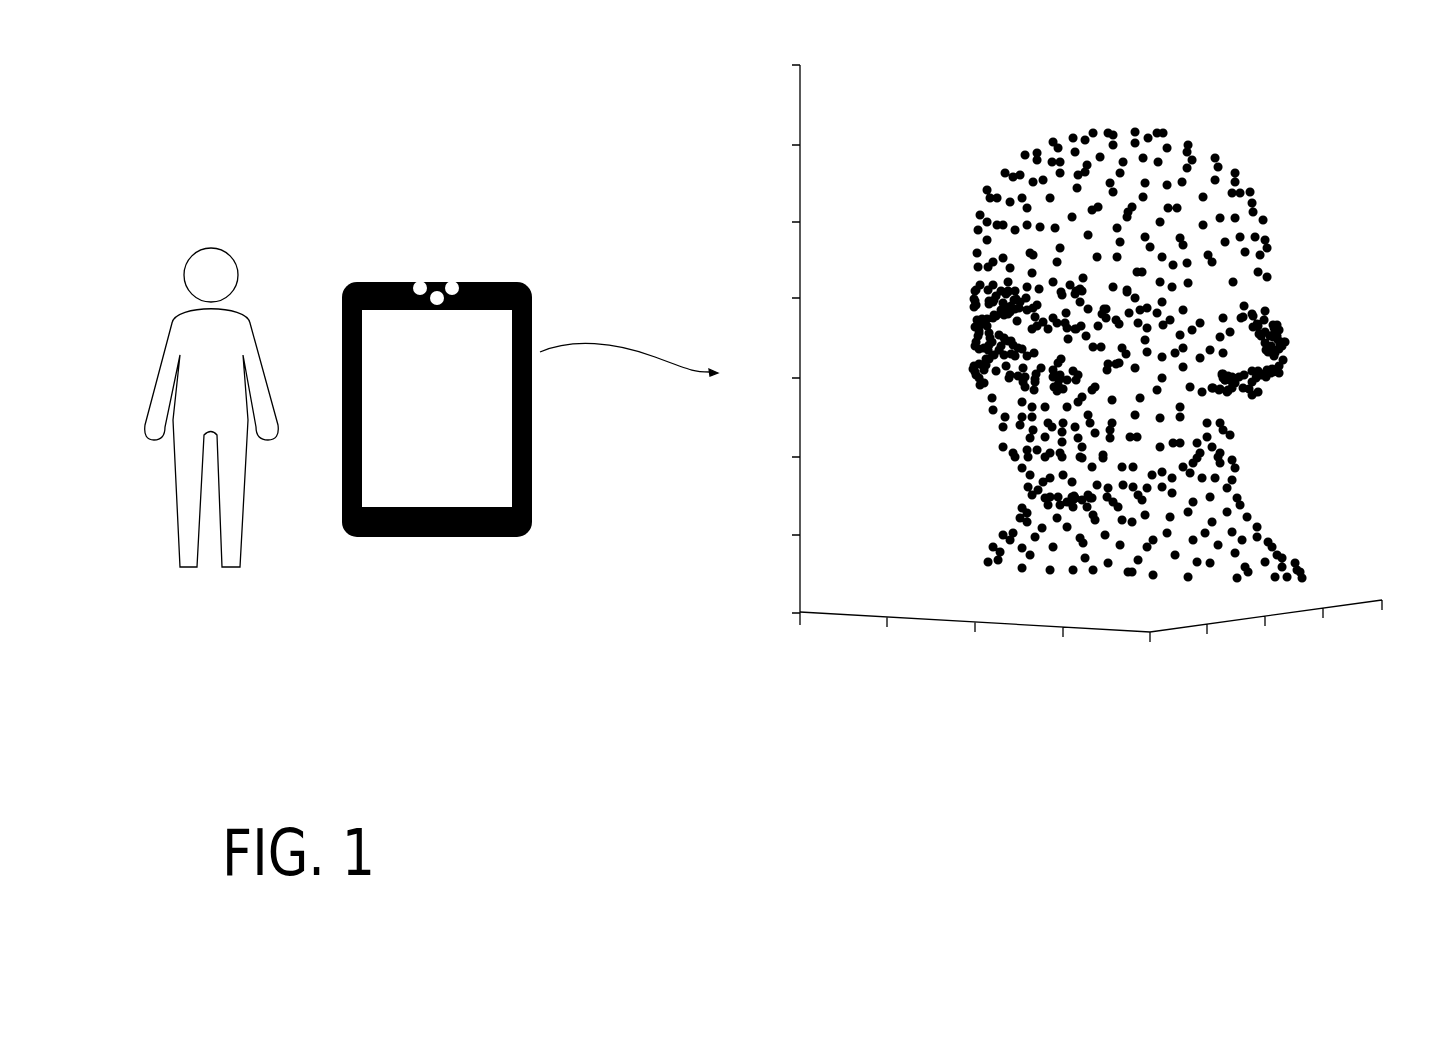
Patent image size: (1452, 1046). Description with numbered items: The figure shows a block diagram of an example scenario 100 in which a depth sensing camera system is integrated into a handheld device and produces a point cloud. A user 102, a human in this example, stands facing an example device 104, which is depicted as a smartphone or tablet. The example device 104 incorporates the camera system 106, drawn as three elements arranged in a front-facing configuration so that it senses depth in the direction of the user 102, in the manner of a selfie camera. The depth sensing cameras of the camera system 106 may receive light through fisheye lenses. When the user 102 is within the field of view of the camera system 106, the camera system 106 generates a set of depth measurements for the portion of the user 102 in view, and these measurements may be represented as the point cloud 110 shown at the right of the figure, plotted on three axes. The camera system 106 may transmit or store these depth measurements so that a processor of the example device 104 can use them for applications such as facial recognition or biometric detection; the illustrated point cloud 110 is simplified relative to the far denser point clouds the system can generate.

The example scenario 100 is at (170, 90).
The user 102 is at (171, 319).
The example device 104 is at (407, 392).
The camera system 106 is at (407, 243).
The point cloud 110 is at (1275, 180).